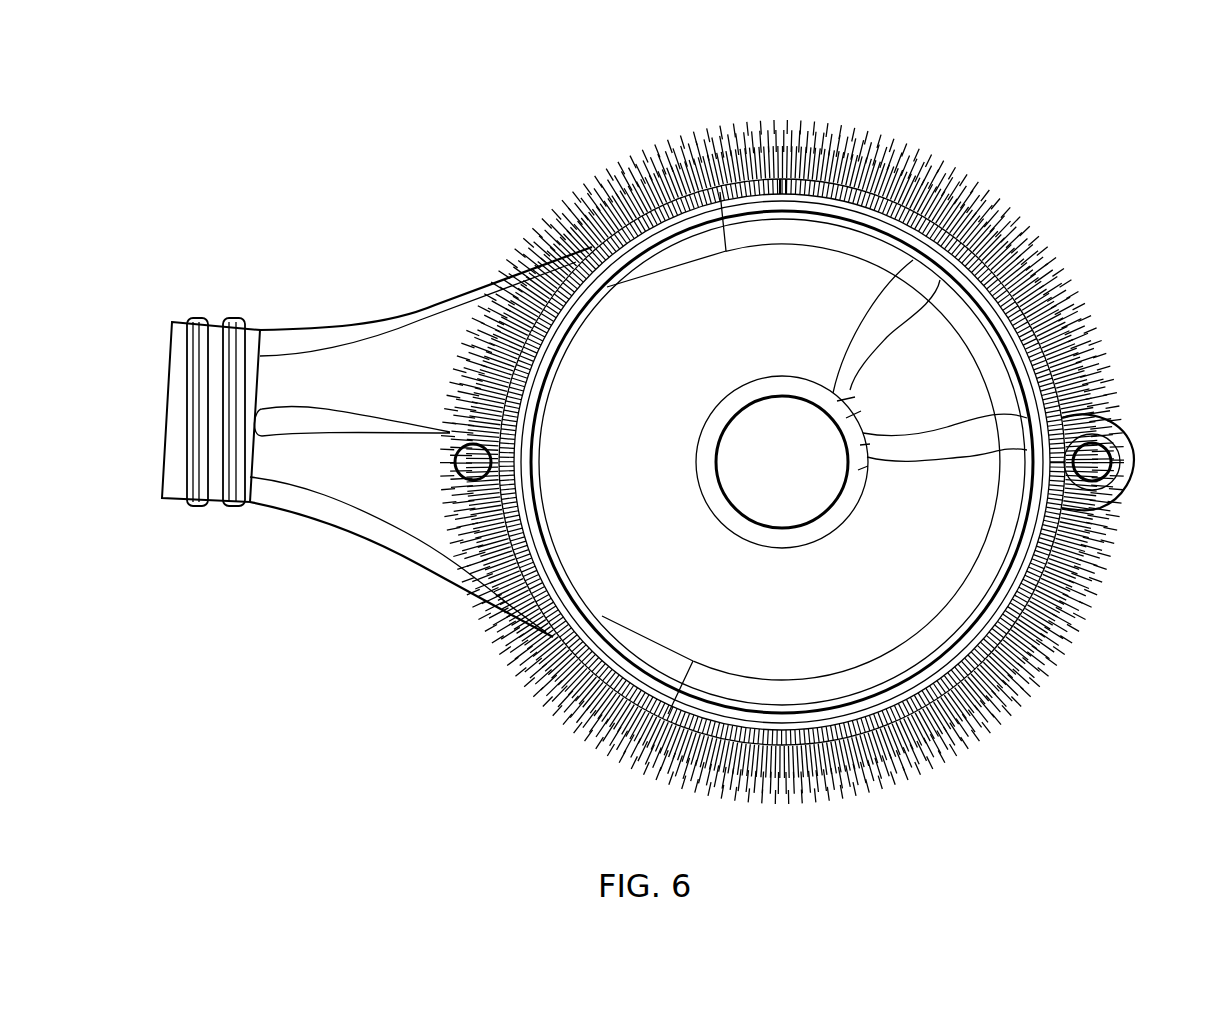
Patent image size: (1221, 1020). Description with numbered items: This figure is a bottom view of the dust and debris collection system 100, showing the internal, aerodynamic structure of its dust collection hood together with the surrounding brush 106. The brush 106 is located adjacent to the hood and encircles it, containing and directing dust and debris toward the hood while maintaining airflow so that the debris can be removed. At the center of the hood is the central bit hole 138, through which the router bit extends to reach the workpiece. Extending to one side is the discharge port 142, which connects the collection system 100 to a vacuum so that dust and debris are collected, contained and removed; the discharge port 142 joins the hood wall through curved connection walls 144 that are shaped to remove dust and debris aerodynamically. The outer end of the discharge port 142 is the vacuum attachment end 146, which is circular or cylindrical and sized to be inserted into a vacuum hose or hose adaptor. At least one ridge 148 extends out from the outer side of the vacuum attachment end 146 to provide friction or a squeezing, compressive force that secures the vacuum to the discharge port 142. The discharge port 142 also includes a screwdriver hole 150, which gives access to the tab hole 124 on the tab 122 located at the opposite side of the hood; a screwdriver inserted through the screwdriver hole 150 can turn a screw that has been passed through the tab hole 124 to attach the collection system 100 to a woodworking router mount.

The collection system 100 is at (954, 70).
The brush 106 is at (612, 768).
The tab 122 is at (1136, 456).
The tab hole 124 is at (1112, 475).
The central bit hole 138 is at (738, 503).
The discharge port 142 is at (370, 312).
The curved connection walls 144 is at (416, 561).
The vacuum attachment end 146 is at (162, 318).
The ridge 148 is at (226, 506).
The screwdriver hole 150 is at (453, 452).